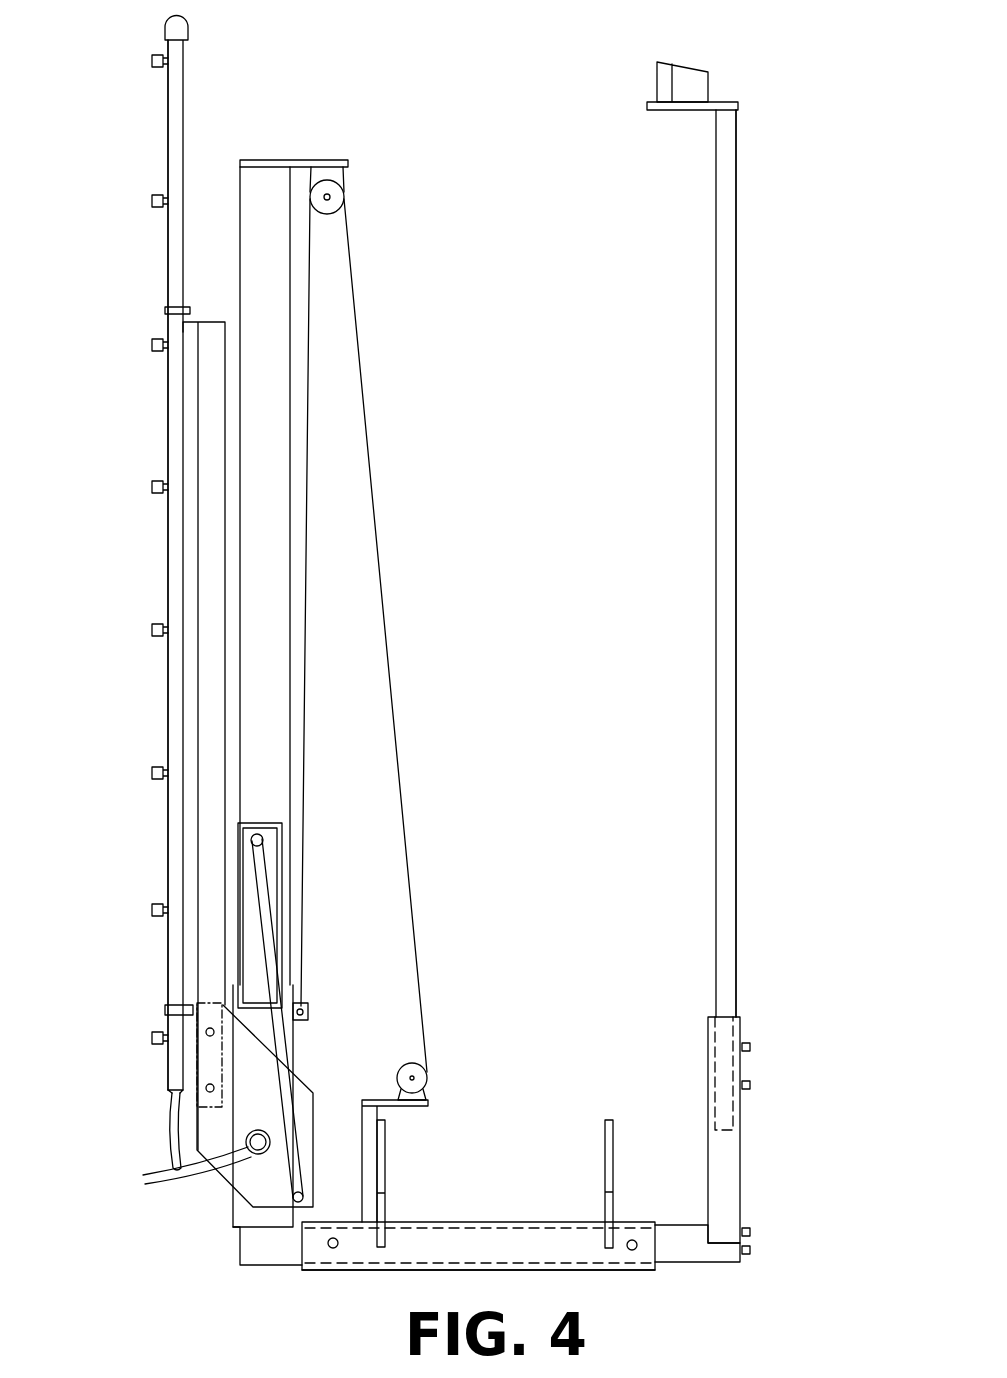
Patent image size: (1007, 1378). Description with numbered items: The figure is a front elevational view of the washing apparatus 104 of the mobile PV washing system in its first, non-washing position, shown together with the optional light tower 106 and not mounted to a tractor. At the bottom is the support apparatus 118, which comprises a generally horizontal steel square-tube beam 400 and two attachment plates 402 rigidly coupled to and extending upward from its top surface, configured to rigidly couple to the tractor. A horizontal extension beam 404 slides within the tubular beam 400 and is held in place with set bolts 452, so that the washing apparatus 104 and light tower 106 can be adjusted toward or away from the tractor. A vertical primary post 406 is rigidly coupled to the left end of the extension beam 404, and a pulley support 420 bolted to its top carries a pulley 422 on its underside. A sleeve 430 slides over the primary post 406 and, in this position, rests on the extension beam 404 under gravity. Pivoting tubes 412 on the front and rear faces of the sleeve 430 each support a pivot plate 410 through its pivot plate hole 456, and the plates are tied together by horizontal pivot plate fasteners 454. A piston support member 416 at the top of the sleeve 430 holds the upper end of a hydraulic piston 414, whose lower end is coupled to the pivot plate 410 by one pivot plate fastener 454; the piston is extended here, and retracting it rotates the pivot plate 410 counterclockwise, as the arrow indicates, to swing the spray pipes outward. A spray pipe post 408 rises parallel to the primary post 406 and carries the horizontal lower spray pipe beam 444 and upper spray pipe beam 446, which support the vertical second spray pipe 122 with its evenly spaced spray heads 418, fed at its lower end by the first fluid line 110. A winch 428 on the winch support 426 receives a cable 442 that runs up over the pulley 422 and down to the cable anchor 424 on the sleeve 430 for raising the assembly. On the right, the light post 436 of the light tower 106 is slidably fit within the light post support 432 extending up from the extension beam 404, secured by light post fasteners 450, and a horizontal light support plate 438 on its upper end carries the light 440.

The washing apparatus 104 is at (93, 195).
The light tower 106 is at (797, 292).
The first fluid line 110 is at (170, 1145).
The support apparatus 118 is at (621, 1303).
The second spray pipe 122 is at (186, 118).
The beam 400 is at (440, 1270).
The attachment plates 402 is at (388, 1170).
The extension beam 404 is at (252, 1270).
The primary post 406 is at (300, 558).
The spray pipe post 408 is at (198, 400).
The pivot plate 410 is at (300, 1080).
The pivoting tubes 412 is at (278, 1124).
The hydraulic piston 414 is at (270, 898).
The piston support member 416 is at (265, 823).
The spray heads 418 is at (152, 631).
The pulley support 420 is at (320, 163).
The pulley 422 is at (346, 186).
The cable anchor 424 is at (309, 1011).
The winch support 426 is at (418, 1107).
The winch 428 is at (416, 1066).
The sleeve 430 is at (232, 1218).
The light post support 432 is at (740, 1016).
The light post 436 is at (717, 290).
The light support plate 438 is at (738, 103).
The light 440 is at (695, 62).
The cable 442 is at (366, 351).
The lower spray pipe beam 444 is at (180, 1003).
The upper spray pipe beam 446 is at (187, 311).
The light post fasteners 450 is at (749, 1085).
The set bolts 452 is at (333, 1250).
The pivot plate fasteners 454 is at (206, 1089).
The pivot plate hole 456 is at (172, 1163).